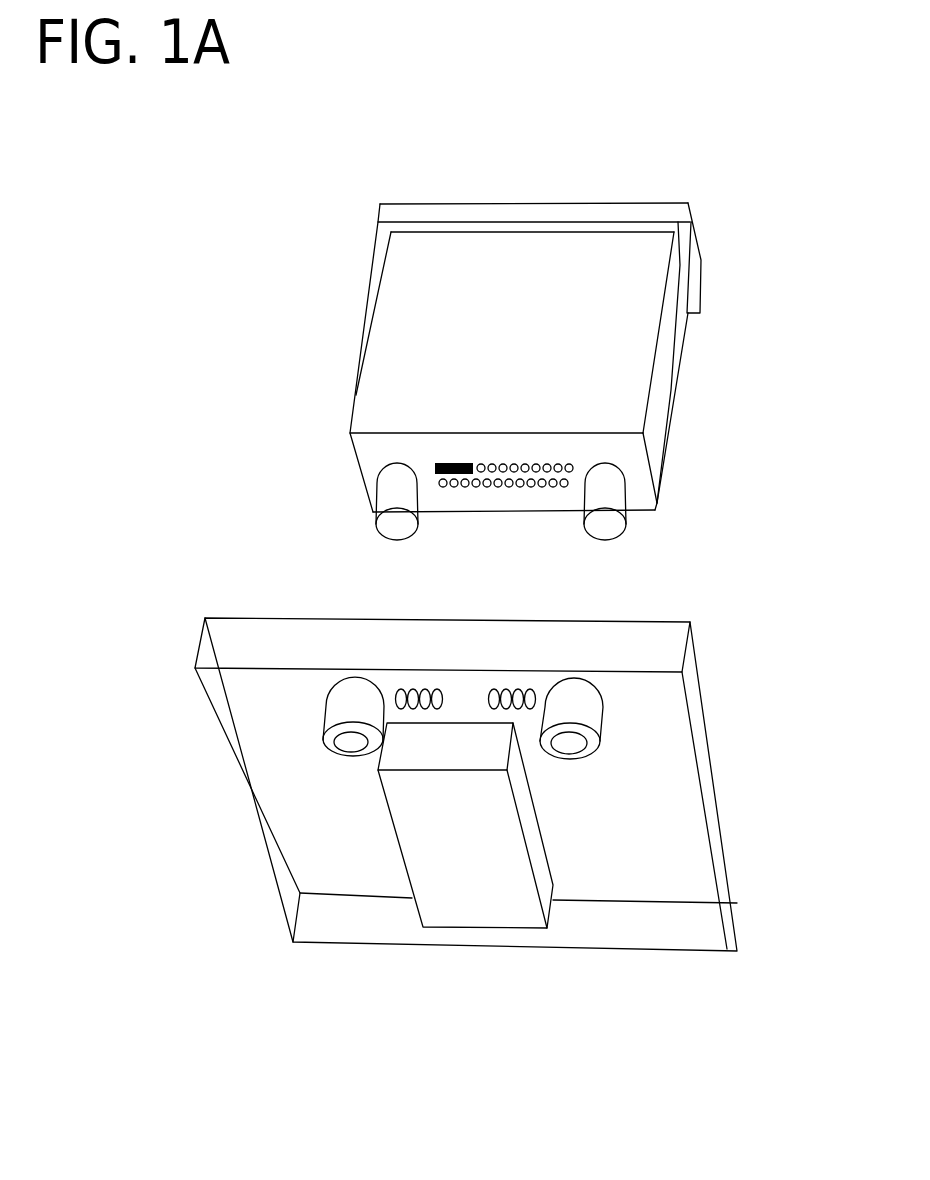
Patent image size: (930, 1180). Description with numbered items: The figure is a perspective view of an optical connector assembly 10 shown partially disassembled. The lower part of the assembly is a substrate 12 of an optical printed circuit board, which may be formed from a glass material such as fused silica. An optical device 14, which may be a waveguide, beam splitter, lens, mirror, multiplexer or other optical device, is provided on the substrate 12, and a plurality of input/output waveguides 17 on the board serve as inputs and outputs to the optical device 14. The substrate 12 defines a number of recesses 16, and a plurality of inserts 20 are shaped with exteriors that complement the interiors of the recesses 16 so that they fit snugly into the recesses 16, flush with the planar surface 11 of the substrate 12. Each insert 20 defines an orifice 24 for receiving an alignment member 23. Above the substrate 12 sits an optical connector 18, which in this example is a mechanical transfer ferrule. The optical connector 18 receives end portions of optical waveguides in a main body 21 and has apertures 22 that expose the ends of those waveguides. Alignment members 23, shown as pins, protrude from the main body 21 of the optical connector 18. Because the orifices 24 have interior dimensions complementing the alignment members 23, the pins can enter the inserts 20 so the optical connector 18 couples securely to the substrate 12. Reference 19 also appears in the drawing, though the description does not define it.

The optical connector assembly 10 is at (160, 385).
The planar surface 11 is at (318, 618).
The substrate 12 is at (700, 672).
The optical device 14 is at (527, 931).
The recesses 16 is at (340, 670).
The input/output waveguides 17 is at (408, 688).
The optical connector 18 is at (756, 366).
The device housing 19 is at (368, 457).
The inserts 20 is at (327, 712).
The main body 21 is at (677, 382).
The apertures 22 is at (445, 490).
The alignment members 23 is at (380, 522).
The orifice 24 is at (351, 745).